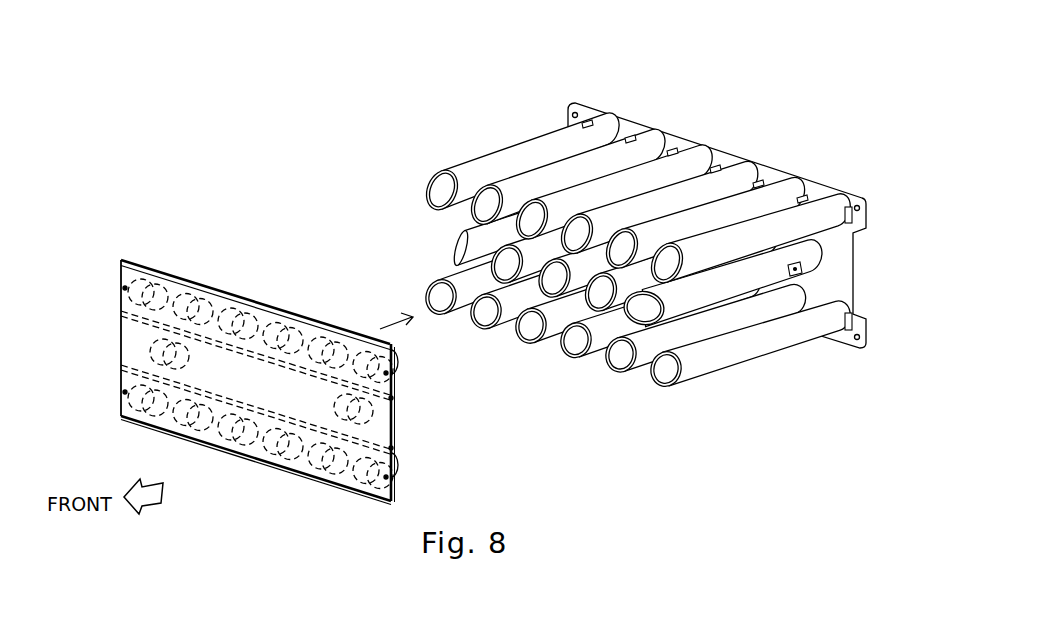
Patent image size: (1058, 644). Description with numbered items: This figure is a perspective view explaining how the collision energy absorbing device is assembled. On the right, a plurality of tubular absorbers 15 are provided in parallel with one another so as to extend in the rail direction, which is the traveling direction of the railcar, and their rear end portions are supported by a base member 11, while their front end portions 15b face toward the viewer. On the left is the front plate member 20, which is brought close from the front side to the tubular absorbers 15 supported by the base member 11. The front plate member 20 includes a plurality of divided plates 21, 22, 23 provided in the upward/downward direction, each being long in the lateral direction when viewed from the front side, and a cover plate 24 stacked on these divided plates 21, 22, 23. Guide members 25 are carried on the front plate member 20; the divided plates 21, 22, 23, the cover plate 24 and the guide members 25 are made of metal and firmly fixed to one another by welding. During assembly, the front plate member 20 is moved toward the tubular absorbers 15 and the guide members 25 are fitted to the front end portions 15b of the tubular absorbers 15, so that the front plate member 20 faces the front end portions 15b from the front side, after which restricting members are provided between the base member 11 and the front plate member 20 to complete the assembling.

The base member 11 is at (679, 131).
The tubular absorber 15 is at (490, 152).
The front end portion 15b is at (451, 166).
The front plate member 20 is at (130, 252).
The divided plate 21 is at (391, 383).
The divided plate 22 is at (391, 437).
The divided plate 23 is at (391, 487).
The cover plate 24 is at (140, 340).
The guide member 25 is at (207, 283).